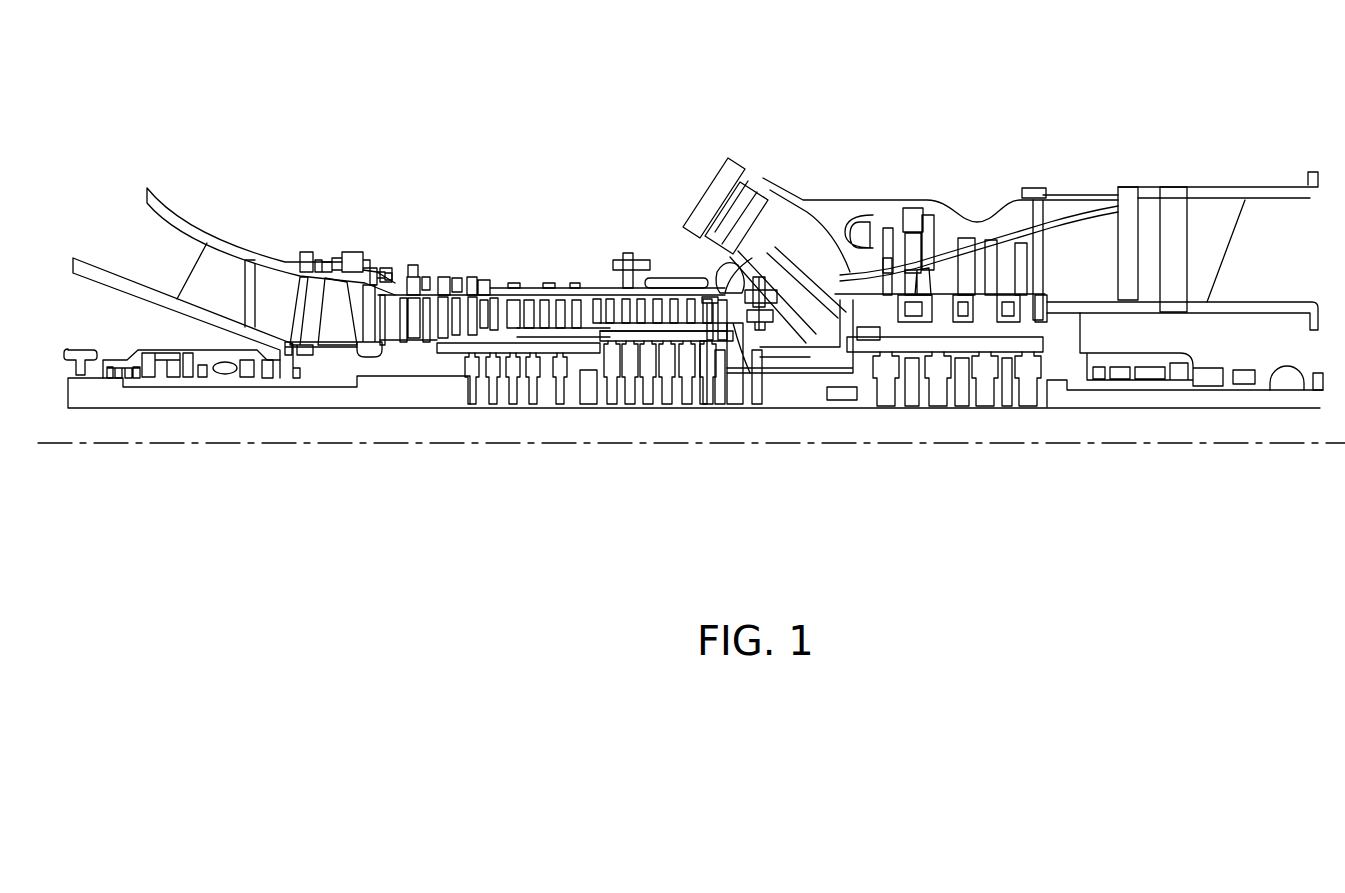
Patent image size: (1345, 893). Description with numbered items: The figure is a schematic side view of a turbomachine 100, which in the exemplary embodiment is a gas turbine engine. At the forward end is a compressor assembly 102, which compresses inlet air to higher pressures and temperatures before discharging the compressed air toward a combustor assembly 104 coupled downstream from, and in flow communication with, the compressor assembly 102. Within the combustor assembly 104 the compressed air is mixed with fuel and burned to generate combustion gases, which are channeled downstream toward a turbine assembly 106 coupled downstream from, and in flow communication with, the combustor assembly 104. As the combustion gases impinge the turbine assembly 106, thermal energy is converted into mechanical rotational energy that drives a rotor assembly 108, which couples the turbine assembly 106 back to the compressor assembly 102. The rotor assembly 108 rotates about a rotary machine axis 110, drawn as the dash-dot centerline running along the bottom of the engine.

The turbomachine 100 is at (298, 92).
The compressor assembly 102 is at (412, 266).
The combustor assembly 104 is at (818, 116).
The turbine assembly 106 is at (790, 450).
The rotor assembly 108 is at (982, 219).
The rotary machine axis 110 is at (504, 412).